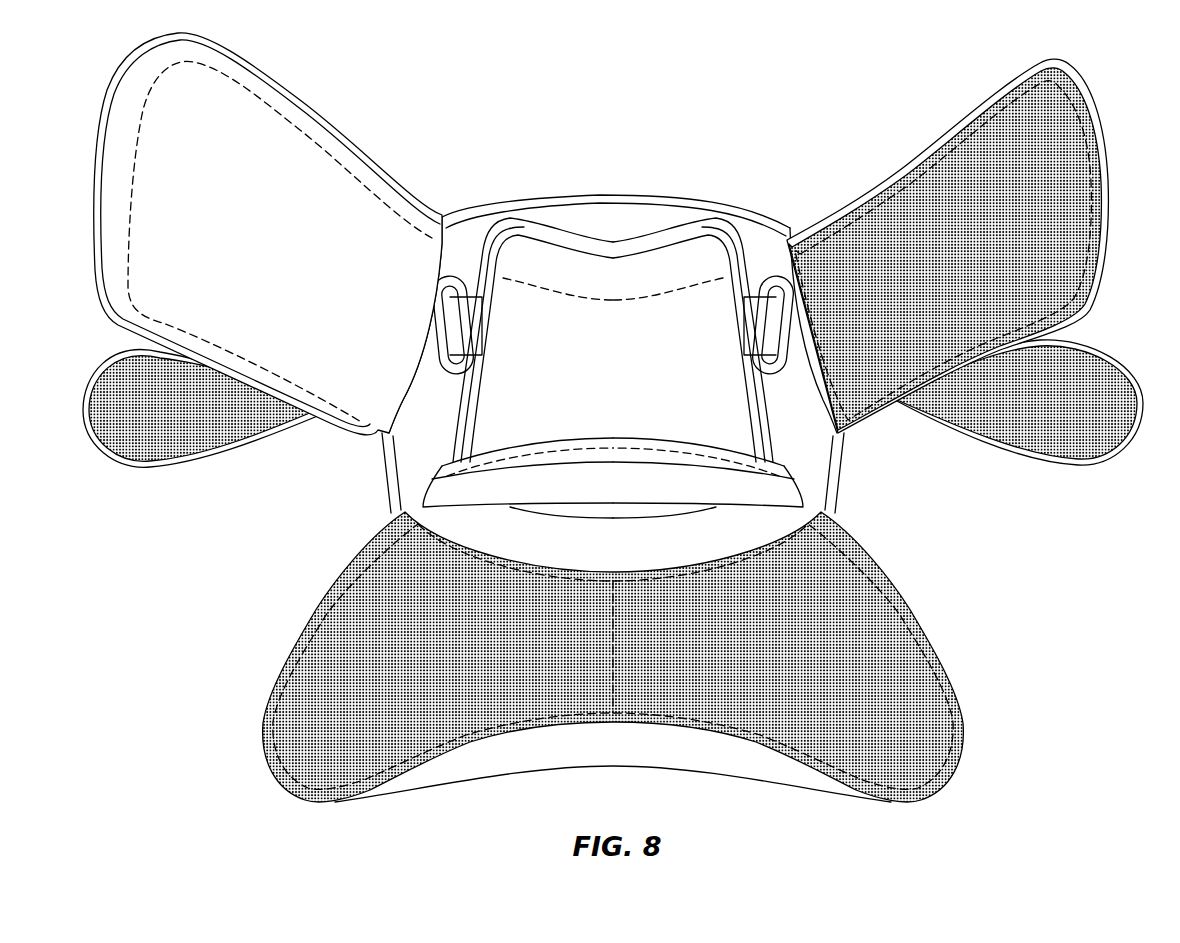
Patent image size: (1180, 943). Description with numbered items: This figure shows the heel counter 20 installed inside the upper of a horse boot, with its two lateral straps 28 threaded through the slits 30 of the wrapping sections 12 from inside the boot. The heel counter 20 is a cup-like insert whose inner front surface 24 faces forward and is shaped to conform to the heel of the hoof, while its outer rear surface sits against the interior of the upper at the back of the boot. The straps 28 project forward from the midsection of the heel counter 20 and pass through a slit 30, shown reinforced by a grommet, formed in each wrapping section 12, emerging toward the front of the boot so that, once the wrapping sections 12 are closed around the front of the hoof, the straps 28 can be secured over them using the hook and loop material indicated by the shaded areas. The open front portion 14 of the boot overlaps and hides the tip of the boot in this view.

The wrapping section 12 is at (305, 185).
The open front portion 14 is at (597, 533).
The heel counter 20 is at (656, 232).
The inner front surface 24 is at (599, 375).
The lateral strap 28 is at (143, 453).
The slit 30 is at (438, 372).